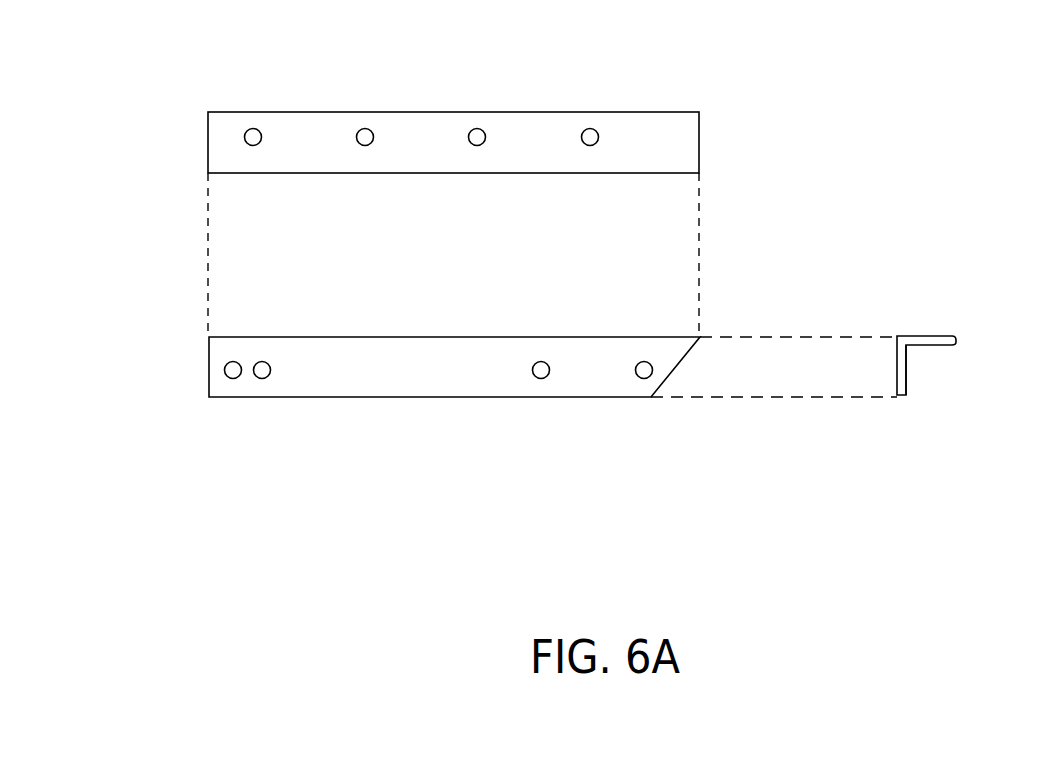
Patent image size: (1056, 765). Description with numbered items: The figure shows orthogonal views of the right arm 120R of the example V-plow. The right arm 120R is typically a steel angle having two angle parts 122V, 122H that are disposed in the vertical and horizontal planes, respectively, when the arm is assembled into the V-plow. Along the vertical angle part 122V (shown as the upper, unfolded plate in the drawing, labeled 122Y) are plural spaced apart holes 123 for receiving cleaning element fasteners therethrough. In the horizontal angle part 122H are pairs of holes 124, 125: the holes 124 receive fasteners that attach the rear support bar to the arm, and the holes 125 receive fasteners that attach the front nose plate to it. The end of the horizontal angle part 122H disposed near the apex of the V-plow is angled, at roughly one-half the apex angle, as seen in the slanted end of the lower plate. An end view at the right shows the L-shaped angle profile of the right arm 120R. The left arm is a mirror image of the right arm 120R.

The right arm 120R is at (649, 124).
The yoke plate 122Y is at (410, 122).
The horizontal angle part 122H is at (354, 380).
The vertical angle part 122V is at (931, 347).
The holes 123 is at (258, 130).
The holes 124 is at (232, 376).
The holes 125 is at (538, 378).